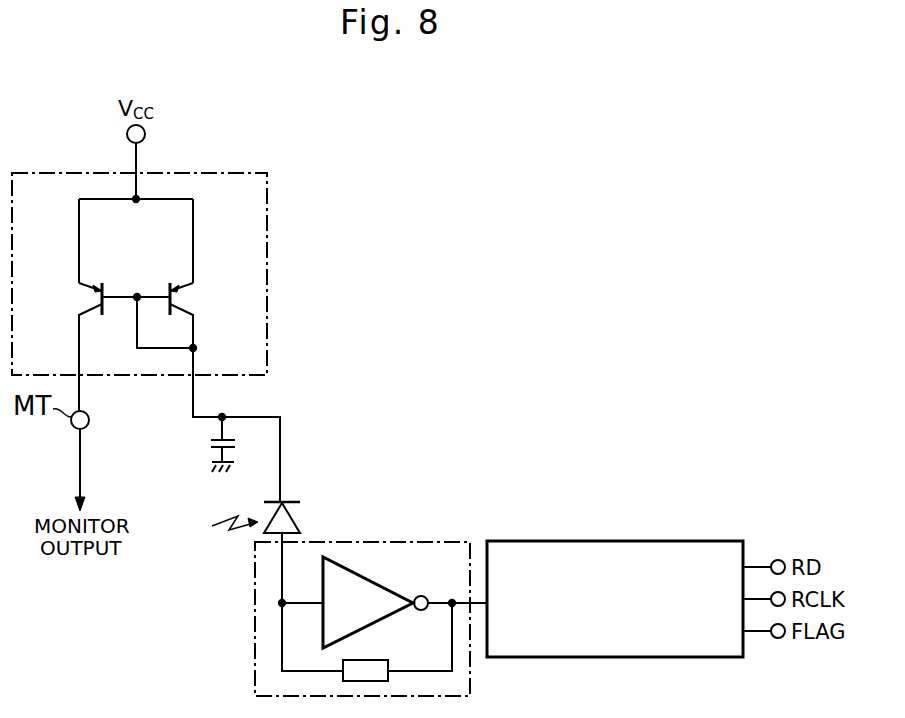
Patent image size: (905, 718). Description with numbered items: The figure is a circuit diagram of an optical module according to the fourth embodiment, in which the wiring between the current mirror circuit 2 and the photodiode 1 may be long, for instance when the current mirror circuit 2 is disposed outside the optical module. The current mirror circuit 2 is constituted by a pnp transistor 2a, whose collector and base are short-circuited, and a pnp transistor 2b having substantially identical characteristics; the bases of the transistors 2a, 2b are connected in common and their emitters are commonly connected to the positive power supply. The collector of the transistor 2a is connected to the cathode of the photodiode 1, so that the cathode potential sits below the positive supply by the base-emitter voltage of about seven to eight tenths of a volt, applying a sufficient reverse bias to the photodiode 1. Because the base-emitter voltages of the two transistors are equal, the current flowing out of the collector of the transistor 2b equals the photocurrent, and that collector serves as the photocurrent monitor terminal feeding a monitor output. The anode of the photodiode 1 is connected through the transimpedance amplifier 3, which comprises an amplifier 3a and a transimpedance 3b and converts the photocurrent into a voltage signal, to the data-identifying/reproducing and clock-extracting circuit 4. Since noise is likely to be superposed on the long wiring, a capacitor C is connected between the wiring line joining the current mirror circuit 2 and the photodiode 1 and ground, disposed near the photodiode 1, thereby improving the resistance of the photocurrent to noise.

The photodiode 1 is at (300, 523).
The current mirror circuit 2 is at (218, 173).
The pnp transistor 2a is at (188, 300).
The pnp transistor 2b is at (88, 298).
The transimpedance amplifier 3 is at (415, 542).
The amplifier 3a is at (380, 577).
The transimpedance 3b is at (377, 660).
The data-identifying/reproducing and clock-extracting circuit 4 is at (617, 541).
The capacitor C is at (210, 446).